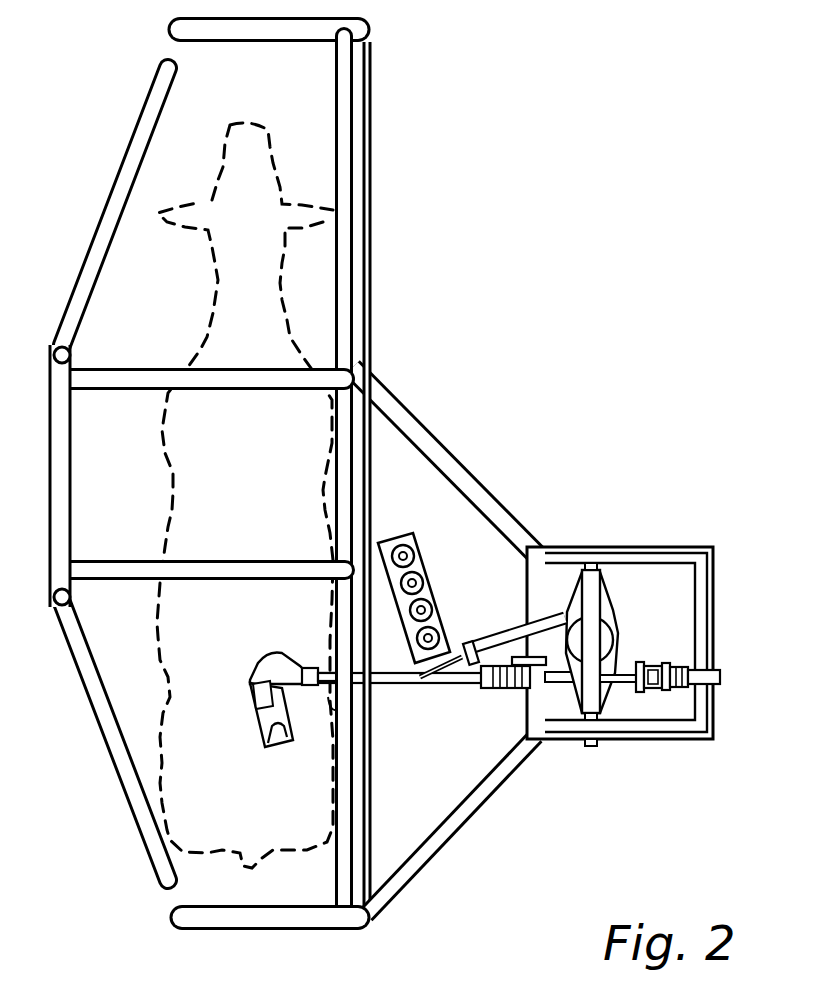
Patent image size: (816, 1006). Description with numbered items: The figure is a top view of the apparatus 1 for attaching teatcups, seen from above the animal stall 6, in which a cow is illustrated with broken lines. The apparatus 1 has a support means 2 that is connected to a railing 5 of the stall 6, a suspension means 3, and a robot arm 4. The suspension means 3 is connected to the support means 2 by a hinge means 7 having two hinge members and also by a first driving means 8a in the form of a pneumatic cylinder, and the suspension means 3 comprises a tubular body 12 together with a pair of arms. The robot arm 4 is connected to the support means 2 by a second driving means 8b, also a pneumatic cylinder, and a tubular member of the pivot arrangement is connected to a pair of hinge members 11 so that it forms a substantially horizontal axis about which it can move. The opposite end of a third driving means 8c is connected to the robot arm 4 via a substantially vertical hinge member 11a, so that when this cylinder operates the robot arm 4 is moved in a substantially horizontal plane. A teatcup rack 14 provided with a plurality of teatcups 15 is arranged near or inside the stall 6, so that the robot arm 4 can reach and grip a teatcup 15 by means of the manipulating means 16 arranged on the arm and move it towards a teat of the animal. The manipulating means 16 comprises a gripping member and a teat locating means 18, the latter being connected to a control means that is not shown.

The apparatus 1 is at (628, 402).
The support means 2 is at (700, 547).
The suspension means 3 is at (636, 617).
The robot arm 4 is at (386, 690).
The railing 5 is at (345, 163).
The animal stall 6 is at (123, 497).
The hinge means 7 is at (616, 606).
The first driving means 8a is at (672, 690).
The second driving means 8b is at (512, 690).
The third driving means 8c is at (562, 612).
The hinge members 11 is at (593, 563).
The hinge member 11a is at (417, 683).
The tubular body 12 is at (613, 638).
The teatcup rack 14 is at (384, 540).
The teatcups 15 is at (414, 552).
The manipulating means 16 is at (243, 733).
The teat locating means 18 is at (248, 692).